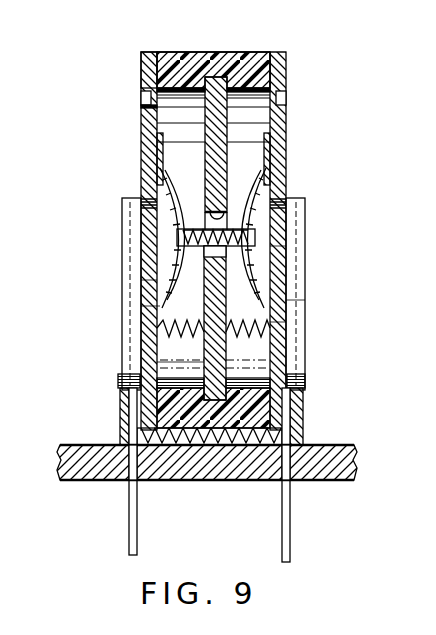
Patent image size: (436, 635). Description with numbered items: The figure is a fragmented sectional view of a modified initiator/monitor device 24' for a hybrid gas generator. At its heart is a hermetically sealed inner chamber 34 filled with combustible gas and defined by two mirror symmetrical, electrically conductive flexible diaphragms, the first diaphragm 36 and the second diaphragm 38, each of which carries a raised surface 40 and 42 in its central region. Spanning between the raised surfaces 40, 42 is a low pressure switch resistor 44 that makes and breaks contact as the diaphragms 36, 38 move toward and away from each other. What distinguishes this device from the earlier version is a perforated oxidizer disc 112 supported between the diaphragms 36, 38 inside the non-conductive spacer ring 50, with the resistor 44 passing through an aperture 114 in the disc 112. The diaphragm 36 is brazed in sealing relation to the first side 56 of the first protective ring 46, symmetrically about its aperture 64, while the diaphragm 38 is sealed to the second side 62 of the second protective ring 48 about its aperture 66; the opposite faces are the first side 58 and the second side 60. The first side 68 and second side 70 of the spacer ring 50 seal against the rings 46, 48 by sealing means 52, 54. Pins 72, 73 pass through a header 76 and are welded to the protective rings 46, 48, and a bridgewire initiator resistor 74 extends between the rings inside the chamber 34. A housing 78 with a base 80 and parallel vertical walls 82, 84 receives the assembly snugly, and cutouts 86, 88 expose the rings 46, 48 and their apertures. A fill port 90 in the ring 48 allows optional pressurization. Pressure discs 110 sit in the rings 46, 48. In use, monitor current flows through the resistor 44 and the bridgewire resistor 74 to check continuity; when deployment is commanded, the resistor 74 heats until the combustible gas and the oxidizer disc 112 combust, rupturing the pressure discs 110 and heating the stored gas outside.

The initiator/monitor device 24' is at (268, 98).
The chamber 34 is at (266, 362).
The first diaphragm 36 is at (250, 242).
The second diaphragm 38 is at (160, 214).
The raised surface 40 is at (292, 322).
The raised surface 42 is at (155, 178).
The resistor 44 is at (157, 252).
The first protective ring 46 is at (298, 272).
The second protective ring 48 is at (158, 280).
The spacer ring 50 is at (236, 60).
The sealing means 52 is at (273, 62).
The sealing means 54 is at (153, 52).
The first side 56 is at (280, 119).
The first side 58 is at (157, 330).
The second side 60 is at (268, 338).
The second side 62 is at (163, 365).
The aperture 64 is at (298, 206).
The aperture 66 is at (138, 203).
The first side 68 is at (288, 68).
The second side 70 is at (143, 62).
The pin 72 is at (292, 505).
The pin 73 is at (126, 521).
The bridgewire initiator resistor 74 is at (160, 306).
The header 76 is at (227, 468).
The housing 78 is at (302, 300).
The base 80 is at (178, 446).
The vertical wall 82 is at (303, 425).
The vertical wall 84 is at (120, 424).
The cutout 86 is at (296, 386).
The cutout 88 is at (120, 380).
The fill port 90 is at (148, 131).
The pressure disc 110 is at (141, 96).
The oxidizer disc 112 is at (218, 172).
The aperture 114 is at (228, 208).